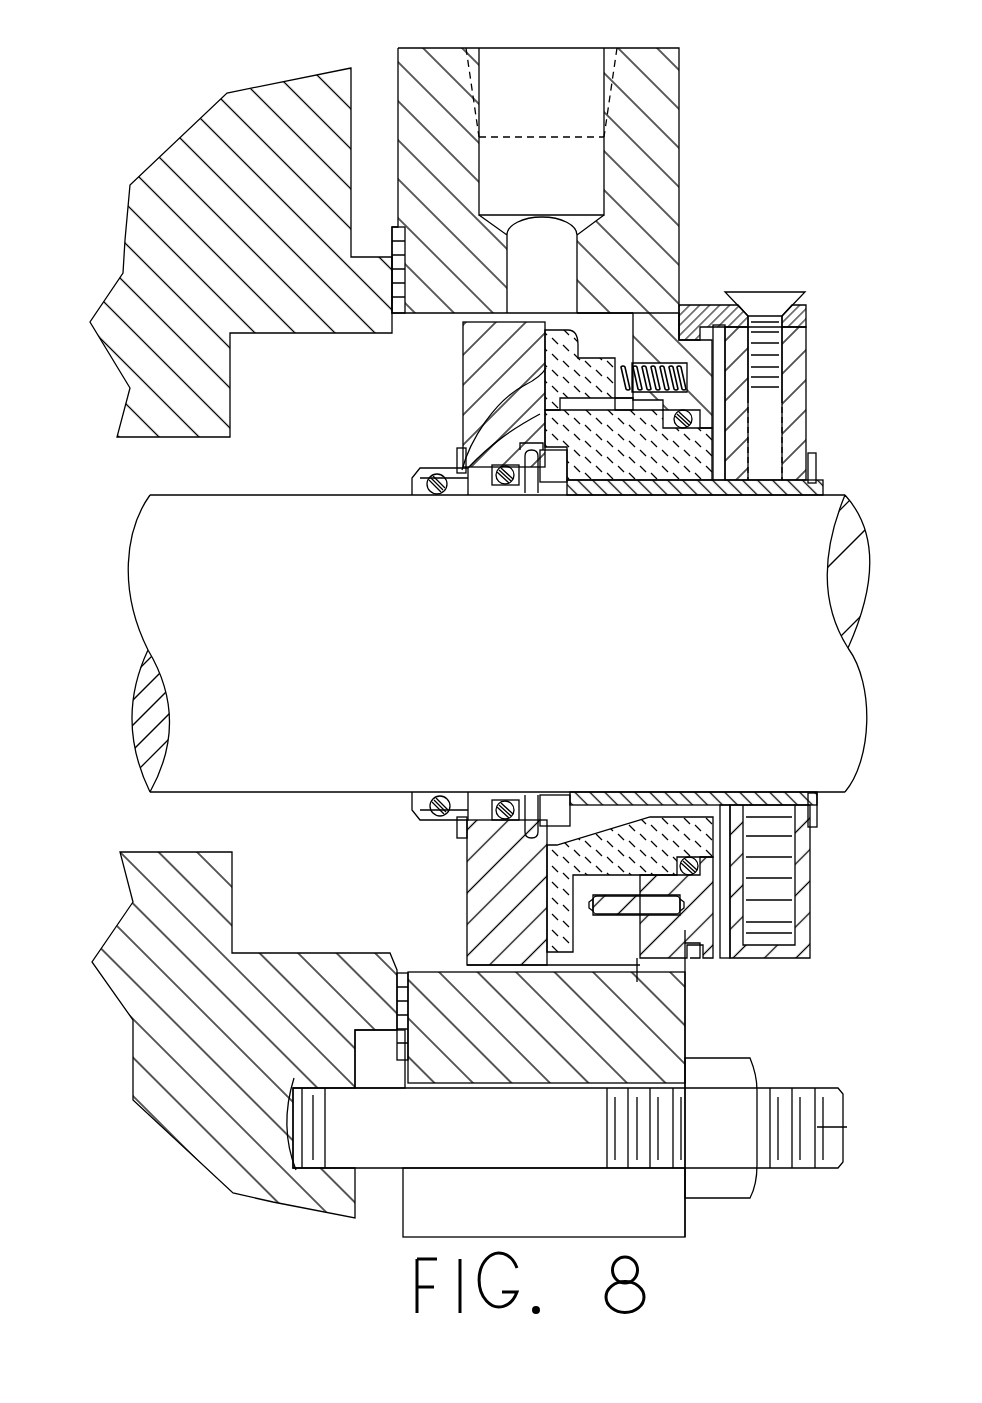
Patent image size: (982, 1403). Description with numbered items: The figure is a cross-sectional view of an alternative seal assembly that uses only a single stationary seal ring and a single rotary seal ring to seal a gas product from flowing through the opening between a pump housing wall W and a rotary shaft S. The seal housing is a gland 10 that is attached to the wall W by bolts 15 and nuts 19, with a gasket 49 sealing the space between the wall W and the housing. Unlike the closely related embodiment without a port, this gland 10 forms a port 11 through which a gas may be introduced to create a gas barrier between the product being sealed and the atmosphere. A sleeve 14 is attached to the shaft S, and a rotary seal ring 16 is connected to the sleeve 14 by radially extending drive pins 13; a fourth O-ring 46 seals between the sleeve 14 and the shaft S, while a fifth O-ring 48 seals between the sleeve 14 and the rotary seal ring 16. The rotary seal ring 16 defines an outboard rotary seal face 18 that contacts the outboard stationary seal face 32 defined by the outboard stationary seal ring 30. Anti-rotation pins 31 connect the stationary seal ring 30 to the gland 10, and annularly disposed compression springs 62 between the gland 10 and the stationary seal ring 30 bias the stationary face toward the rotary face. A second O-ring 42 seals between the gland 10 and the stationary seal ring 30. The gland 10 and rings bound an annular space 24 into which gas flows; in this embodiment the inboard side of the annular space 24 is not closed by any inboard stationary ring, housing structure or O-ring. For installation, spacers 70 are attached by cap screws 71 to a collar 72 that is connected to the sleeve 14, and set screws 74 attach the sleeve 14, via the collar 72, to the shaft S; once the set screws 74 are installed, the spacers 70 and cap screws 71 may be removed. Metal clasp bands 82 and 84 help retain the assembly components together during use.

The gland 10 is at (414, 60).
The port 11 is at (561, 82).
The drive pins 13 is at (538, 470).
The sleeve 14 is at (720, 490).
The bolts 15 is at (845, 1130).
The rotary seal ring 16 is at (466, 495).
The outboard rotary seal face 18 is at (615, 445).
The nuts 19 is at (710, 1180).
The annular space 24 is at (600, 332).
The outboard stationary seal ring 30 is at (640, 460).
The anti-rotation pins 31 is at (635, 908).
The outboard stationary seal face 32 is at (565, 470).
The second O-ring 42 is at (690, 428).
The fourth O-ring 46 is at (458, 472).
The fifth O-ring 48 is at (512, 482).
The gasket 49 is at (400, 262).
The compression springs 62 is at (662, 378).
The spacers 70 is at (806, 322).
The cap screws 71 is at (767, 292).
The collar 72 is at (760, 482).
The set screws 74 is at (768, 933).
The metal clasp band 82 is at (475, 808).
The metal clasp band 84 is at (812, 800).
The rotary shaft S is at (158, 553).
The housing wall W is at (200, 162).